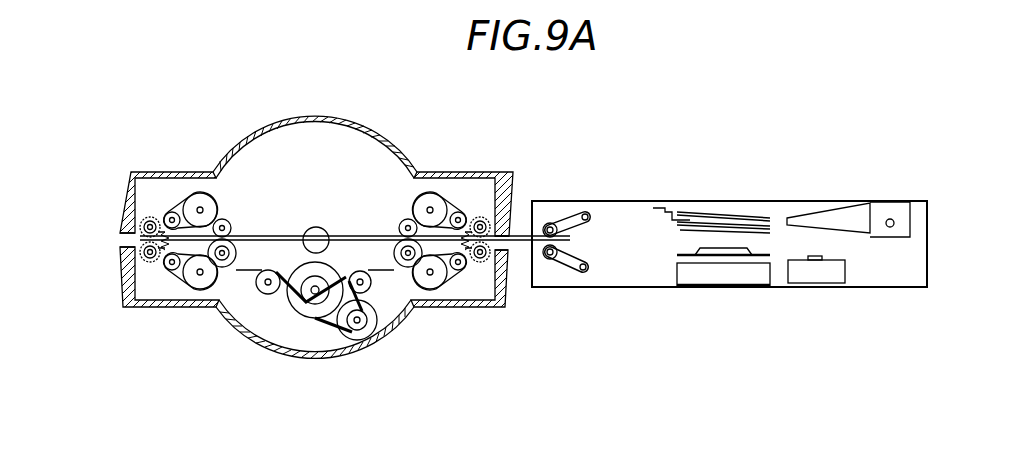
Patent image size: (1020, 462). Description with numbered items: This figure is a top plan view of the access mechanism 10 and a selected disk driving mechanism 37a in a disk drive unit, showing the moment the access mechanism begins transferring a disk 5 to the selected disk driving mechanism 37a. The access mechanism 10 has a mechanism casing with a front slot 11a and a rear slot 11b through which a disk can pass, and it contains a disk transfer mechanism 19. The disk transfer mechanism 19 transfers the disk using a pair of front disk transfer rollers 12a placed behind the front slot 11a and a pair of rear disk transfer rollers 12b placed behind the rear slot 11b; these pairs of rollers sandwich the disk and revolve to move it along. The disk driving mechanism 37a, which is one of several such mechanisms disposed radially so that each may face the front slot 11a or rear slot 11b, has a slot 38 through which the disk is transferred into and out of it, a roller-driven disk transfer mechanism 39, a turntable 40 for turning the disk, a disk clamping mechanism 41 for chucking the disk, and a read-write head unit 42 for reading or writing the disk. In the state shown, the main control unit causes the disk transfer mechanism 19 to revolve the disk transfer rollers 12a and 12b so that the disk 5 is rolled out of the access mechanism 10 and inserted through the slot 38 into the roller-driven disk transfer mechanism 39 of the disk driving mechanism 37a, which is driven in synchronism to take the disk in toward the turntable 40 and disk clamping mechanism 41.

The access mechanism 10 is at (373, 128).
The front slot 11a is at (508, 282).
The rear slot 11b is at (120, 240).
The front disk transfer rollers 12a is at (470, 214).
The rear disk transfer rollers 12b is at (152, 214).
The disk transfer mechanism 19 is at (285, 232).
The slot 38 is at (524, 234).
The roller-driven disk transfer mechanism 39 is at (554, 220).
The disk driving mechanism 37a is at (626, 201).
The disk clamping mechanism 41 is at (733, 211).
The turntable 40 is at (674, 280).
The read-write head unit 42 is at (845, 276).
The disk 5 is at (585, 240).